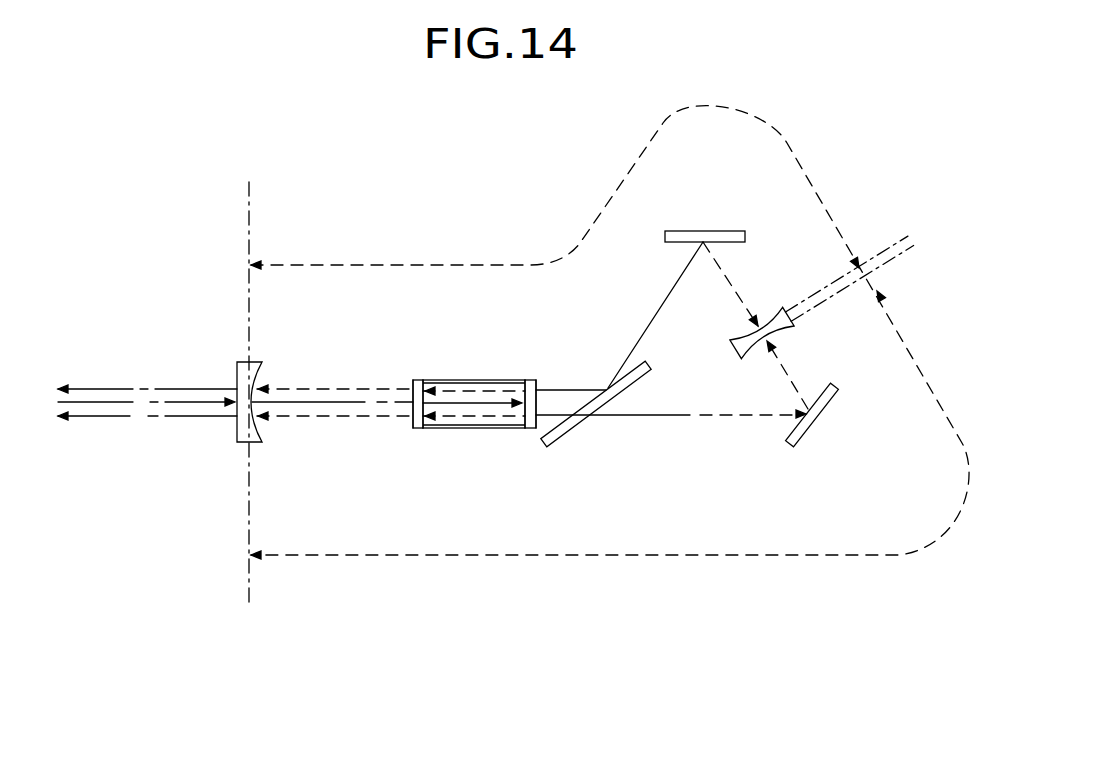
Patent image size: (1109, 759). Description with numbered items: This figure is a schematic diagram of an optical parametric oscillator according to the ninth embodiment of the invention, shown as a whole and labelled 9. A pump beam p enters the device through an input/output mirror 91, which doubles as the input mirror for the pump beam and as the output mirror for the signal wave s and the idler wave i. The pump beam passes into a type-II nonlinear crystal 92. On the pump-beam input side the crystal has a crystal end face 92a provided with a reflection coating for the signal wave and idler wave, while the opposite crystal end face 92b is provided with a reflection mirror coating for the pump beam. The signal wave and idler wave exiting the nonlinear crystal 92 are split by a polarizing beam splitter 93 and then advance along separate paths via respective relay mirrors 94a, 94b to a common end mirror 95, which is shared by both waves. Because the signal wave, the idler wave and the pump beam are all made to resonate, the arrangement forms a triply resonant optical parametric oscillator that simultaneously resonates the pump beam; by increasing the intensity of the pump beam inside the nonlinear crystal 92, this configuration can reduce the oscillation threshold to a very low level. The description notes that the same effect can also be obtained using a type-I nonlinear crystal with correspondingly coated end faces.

The optical parametric oscillator 9 is at (221, 242).
The input/output mirror 91 is at (260, 428).
The type-II nonlinear crystal 92 is at (473, 430).
The crystal end face 92a is at (412, 380).
The crystal end face 92b is at (538, 380).
The polarizing beam splitter 93 is at (587, 422).
The relay mirror 94a is at (813, 430).
The relay mirror 94b is at (703, 231).
The common end mirror 95 is at (745, 350).